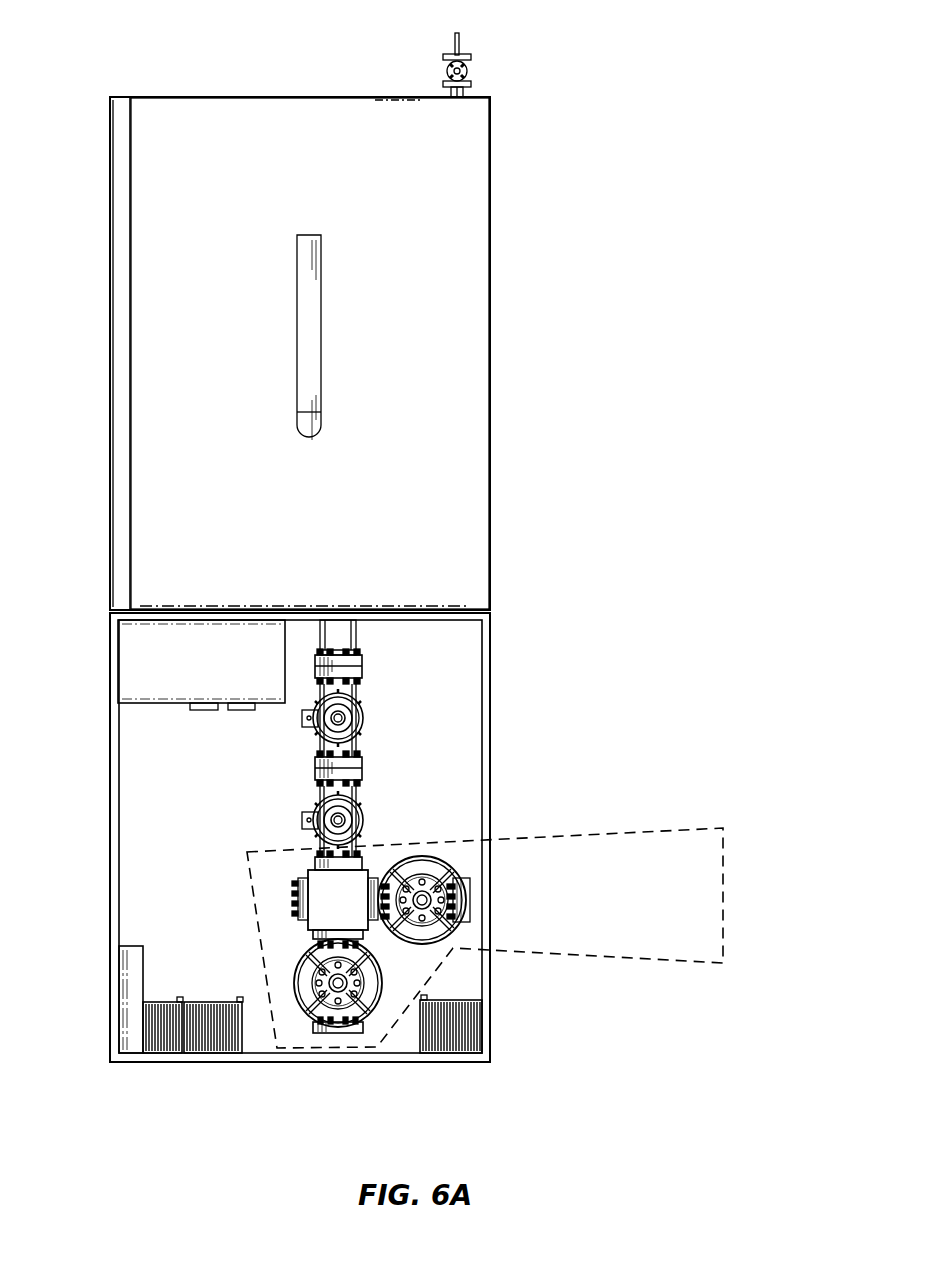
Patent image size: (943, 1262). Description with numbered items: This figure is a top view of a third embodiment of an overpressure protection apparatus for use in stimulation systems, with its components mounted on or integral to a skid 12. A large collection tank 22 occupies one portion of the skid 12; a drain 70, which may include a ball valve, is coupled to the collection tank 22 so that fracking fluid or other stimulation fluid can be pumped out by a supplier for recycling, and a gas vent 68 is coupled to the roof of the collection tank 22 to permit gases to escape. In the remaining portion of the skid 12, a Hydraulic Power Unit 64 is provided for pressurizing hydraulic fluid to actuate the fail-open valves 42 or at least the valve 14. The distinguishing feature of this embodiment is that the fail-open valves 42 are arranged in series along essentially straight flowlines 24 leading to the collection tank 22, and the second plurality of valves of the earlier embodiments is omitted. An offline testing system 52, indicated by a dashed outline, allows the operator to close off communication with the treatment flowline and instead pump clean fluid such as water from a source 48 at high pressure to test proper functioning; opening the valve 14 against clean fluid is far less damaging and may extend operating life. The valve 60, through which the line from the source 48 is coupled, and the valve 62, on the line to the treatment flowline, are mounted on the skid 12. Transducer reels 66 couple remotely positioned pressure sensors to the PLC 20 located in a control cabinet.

The skid 12 is at (110, 225).
The collection tank 22 is at (480, 240).
The drain 70 is at (470, 70).
The gas vent 68 is at (308, 235).
The Hydraulic Power Unit 64 is at (127, 668).
The flowlines 24 is at (338, 620).
The fail-open valves 42 is at (357, 690).
The valve 14 is at (362, 718).
The valve 60 is at (458, 936).
The source 48 is at (472, 900).
The valve 62 is at (338, 1033).
The offline testing system 52 is at (630, 828).
The PLC 20 is at (121, 1000).
The transducer reels 66 is at (165, 1053).